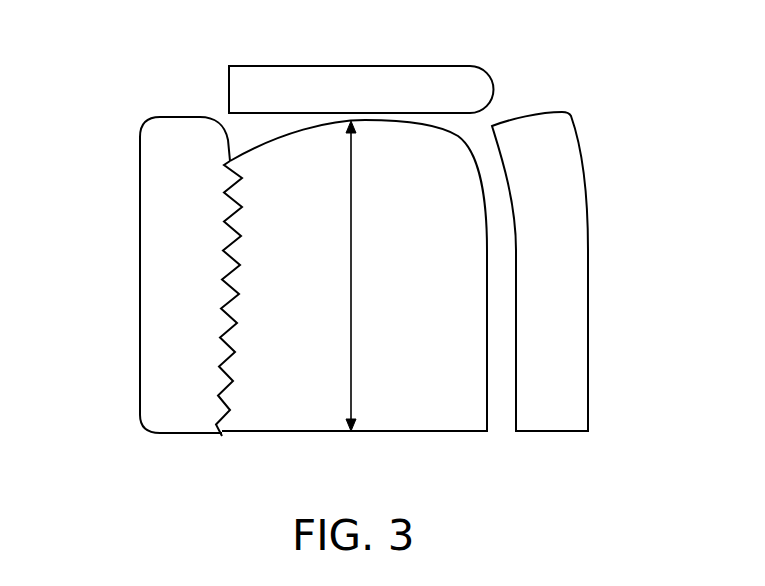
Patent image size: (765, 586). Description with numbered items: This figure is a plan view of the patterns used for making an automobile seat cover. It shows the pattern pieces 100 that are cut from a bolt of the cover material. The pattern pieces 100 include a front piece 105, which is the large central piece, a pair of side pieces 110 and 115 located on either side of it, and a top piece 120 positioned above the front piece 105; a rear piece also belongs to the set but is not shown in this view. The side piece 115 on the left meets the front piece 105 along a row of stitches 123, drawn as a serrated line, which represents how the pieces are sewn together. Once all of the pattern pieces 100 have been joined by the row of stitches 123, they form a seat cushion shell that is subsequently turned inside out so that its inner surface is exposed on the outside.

The pattern pieces 100 is at (536, 84).
The front piece 105 is at (419, 431).
The side piece 110 is at (587, 213).
The side piece 115 is at (147, 193).
The top piece 120 is at (270, 66).
The row of stitches 123 is at (223, 438).